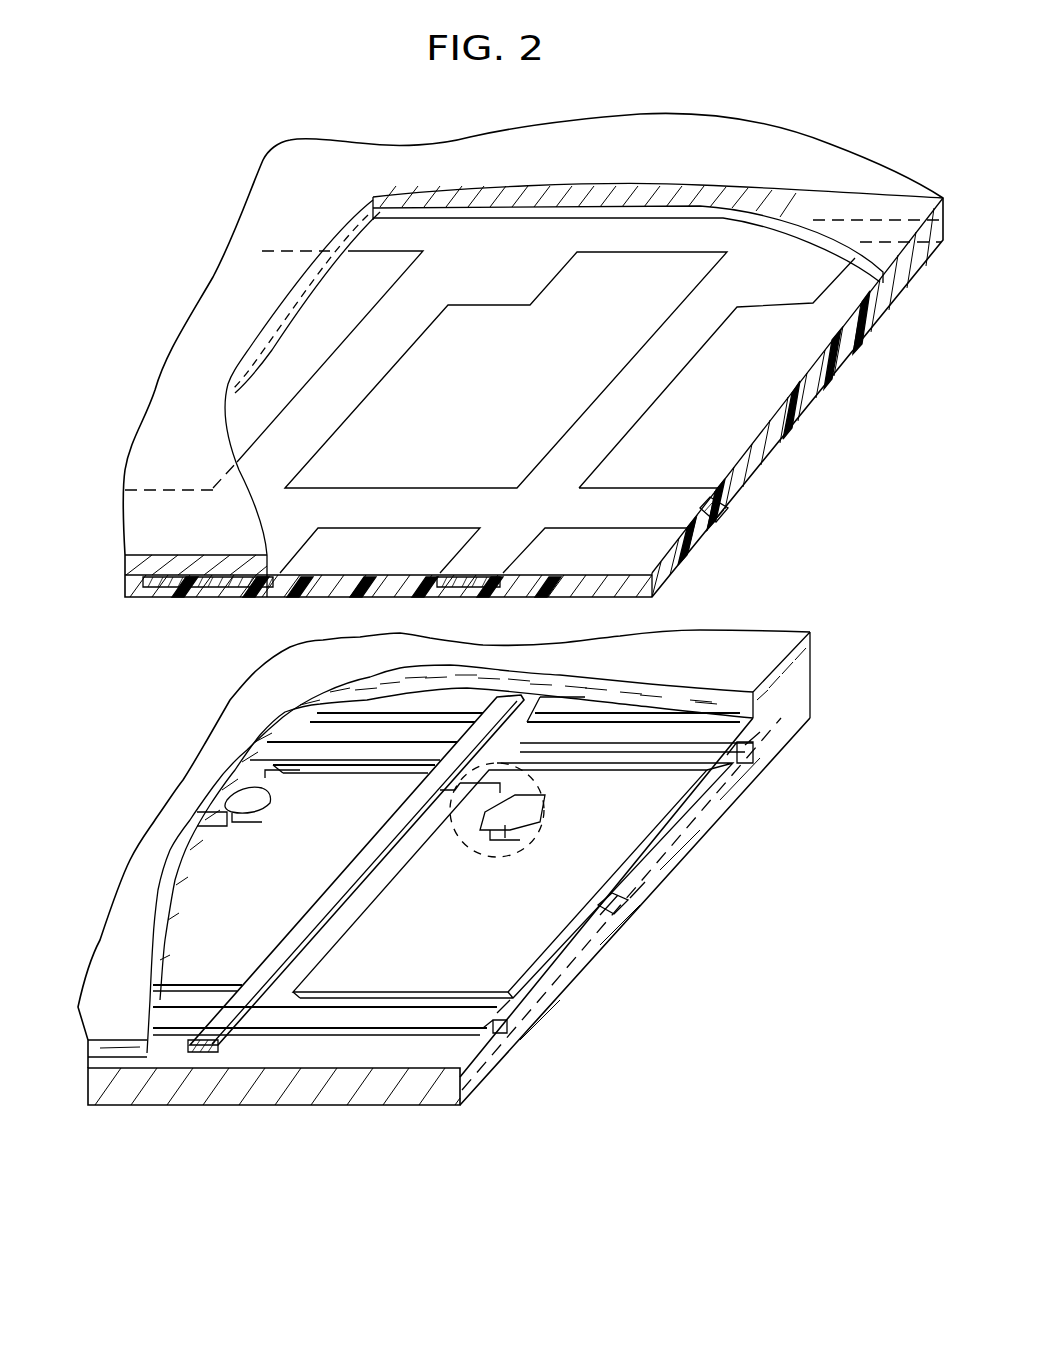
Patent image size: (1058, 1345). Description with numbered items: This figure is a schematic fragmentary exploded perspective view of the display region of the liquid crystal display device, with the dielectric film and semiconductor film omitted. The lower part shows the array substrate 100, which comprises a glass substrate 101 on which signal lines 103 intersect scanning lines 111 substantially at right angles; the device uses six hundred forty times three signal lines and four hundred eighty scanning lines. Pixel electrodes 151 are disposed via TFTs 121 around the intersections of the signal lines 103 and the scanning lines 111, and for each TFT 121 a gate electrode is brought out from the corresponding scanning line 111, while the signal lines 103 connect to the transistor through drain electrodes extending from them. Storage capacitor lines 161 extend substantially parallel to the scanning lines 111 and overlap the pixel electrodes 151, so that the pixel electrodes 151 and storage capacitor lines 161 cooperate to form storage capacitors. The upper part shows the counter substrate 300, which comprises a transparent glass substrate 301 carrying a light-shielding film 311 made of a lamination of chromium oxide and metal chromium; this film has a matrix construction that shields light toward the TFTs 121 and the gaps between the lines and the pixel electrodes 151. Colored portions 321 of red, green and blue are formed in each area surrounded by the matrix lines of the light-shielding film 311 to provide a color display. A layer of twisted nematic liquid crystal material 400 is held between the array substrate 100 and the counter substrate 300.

The array substrate 100 is at (164, 795).
The glass substrate 101 is at (790, 723).
The signal lines 103 is at (203, 1047).
The scanning lines 111 is at (747, 752).
The TFTs 121 is at (525, 832).
The pixel electrodes 151 is at (600, 857).
The storage capacitor lines 161 is at (618, 907).
The counter substrate 300 is at (174, 330).
The transparent glass substrate 301 is at (910, 245).
The light-shielding film 311 is at (720, 513).
The colored portions 321 is at (813, 390).
The twisted nematic liquid crystal material 400 is at (813, 648).